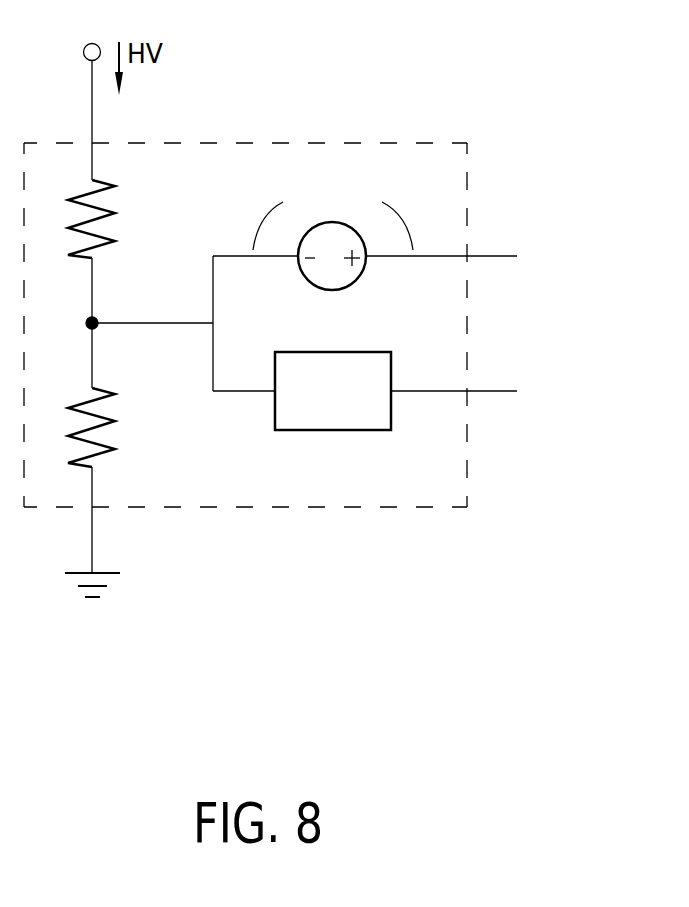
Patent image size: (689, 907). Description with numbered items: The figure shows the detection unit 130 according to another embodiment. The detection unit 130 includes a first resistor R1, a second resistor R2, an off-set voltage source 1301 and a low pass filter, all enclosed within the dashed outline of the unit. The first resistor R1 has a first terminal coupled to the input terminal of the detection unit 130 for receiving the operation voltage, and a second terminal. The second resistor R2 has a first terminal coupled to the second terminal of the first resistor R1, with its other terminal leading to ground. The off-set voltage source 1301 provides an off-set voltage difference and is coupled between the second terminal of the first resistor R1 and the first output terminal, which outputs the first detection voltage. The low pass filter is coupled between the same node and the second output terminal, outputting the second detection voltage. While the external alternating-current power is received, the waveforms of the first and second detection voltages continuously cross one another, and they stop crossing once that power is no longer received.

The detection unit 130 is at (312, 321).
The off-set voltage source 1301 is at (337, 289).
The first resistor R1 is at (116, 219).
The second resistor R2 is at (116, 427).